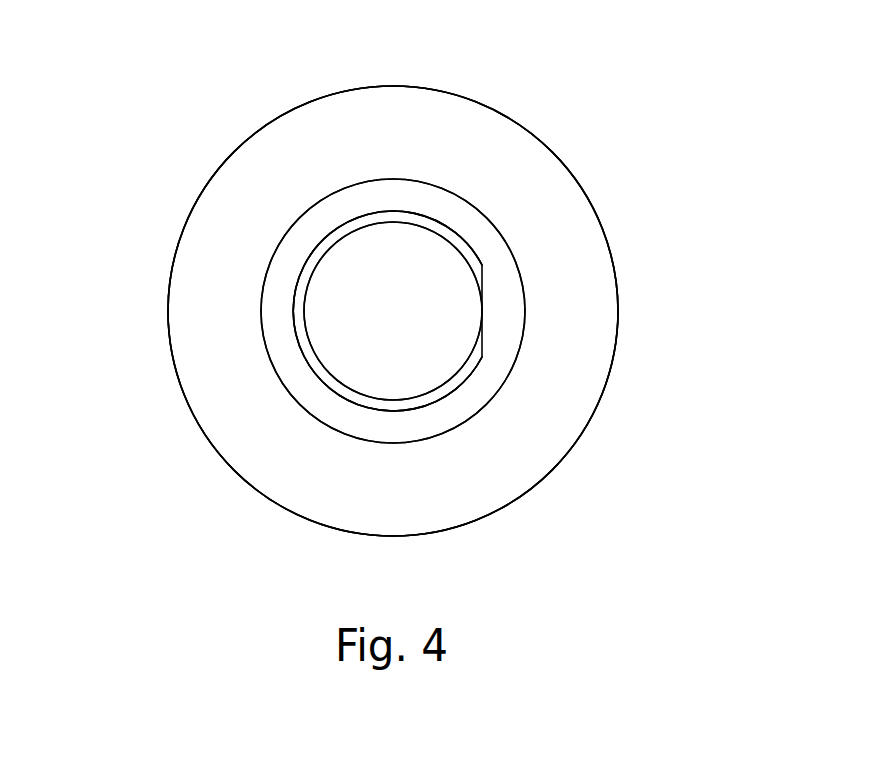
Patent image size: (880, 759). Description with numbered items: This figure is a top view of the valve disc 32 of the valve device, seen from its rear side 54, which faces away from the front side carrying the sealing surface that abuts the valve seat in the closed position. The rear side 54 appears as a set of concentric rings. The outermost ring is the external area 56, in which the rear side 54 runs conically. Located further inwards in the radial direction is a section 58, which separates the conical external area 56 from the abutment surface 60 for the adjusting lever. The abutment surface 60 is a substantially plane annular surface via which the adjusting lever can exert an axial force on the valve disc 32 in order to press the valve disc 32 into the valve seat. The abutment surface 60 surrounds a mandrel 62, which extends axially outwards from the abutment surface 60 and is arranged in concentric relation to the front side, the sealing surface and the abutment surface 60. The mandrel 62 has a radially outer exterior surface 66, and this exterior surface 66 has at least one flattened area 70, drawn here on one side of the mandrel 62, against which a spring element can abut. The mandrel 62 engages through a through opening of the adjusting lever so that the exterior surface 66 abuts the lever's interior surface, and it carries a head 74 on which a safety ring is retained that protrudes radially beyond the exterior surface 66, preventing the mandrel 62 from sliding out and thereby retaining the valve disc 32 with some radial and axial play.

The valve disc 32 is at (184, 125).
The rear side 54 is at (445, 110).
The external area 56 is at (560, 182).
The section 58 is at (527, 313).
The abutment surface 60 is at (508, 350).
The flattened area 70 is at (500, 288).
The exterior surface 66 is at (372, 416).
The mandrel 62 is at (428, 372).
The head 74 is at (348, 372).